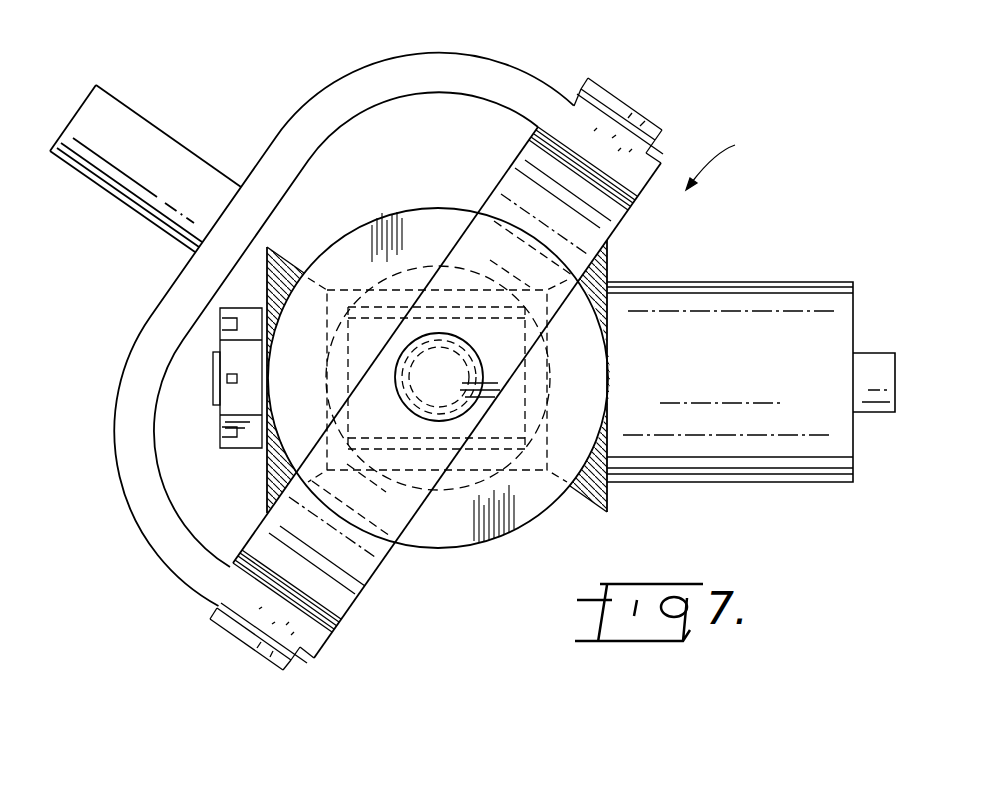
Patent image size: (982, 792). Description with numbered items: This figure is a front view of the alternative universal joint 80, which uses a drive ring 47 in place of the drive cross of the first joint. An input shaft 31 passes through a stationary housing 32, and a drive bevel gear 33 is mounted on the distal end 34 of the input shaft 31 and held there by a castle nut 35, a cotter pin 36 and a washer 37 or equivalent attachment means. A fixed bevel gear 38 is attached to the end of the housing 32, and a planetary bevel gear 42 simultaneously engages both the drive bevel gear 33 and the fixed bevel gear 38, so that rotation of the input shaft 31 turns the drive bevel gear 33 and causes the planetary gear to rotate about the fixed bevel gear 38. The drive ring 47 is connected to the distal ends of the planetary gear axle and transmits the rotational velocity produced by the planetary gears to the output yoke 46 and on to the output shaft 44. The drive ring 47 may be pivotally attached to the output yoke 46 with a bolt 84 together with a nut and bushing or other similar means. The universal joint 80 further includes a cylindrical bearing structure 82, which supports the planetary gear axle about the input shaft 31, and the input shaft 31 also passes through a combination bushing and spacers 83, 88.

The input shaft 31 is at (868, 358).
The stationary housing 32 is at (725, 282).
The drive bevel gear 33 is at (267, 497).
The distal end 34 is at (212, 374).
The castle nut 35 is at (238, 316).
The cotter pin 36 is at (228, 382).
The washer 37 is at (263, 452).
The fixed bevel gear 38 is at (590, 504).
The planetary bevel gear 42 is at (387, 217).
The output shaft 44 is at (148, 132).
The output yoke 46 is at (407, 52).
The drive ring 47 is at (367, 580).
The universal joint 80 is at (732, 160).
The cylindrical bearing structure 82 is at (414, 268).
The combination bushing and spacers 83 is at (543, 517).
The bolt 84 is at (613, 108).
The combination bushing and spacers 88 is at (437, 370).